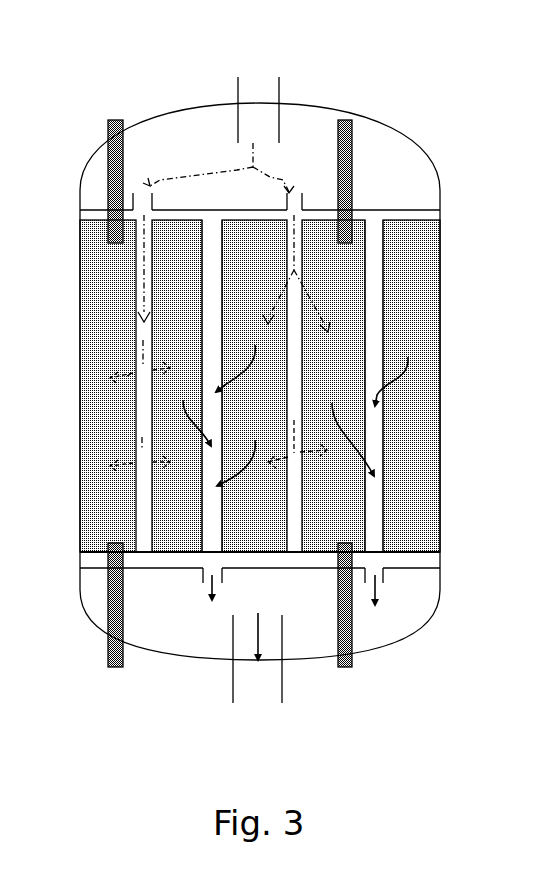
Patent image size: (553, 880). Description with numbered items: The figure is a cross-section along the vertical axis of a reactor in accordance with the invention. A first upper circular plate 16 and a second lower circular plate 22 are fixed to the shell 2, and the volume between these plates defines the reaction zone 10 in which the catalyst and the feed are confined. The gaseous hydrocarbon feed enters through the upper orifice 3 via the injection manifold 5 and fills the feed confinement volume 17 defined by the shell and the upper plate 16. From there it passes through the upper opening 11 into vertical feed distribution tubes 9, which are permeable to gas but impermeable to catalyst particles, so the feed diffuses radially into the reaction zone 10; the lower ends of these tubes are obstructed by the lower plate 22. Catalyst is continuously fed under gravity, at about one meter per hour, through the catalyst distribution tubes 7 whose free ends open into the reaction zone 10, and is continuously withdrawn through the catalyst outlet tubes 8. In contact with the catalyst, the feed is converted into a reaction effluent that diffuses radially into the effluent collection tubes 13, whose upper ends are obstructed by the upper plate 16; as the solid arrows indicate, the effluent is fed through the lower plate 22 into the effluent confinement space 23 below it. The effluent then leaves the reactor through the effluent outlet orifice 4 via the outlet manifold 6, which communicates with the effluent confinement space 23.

The shell 2 is at (408, 153).
The upper orifice 3 is at (264, 84).
The effluent outlet orifice 4 is at (262, 690).
The injection manifold 5 is at (280, 100).
The outlet manifold 6 is at (283, 678).
The catalyst distribution tubes 7 is at (112, 131).
The catalyst outlet tubes 8 is at (352, 623).
The feed distribution tubes 9 is at (140, 413).
The reaction zone 10 is at (432, 280).
The upper opening 11 is at (140, 195).
The effluent collection tubes 13 is at (213, 290).
The first upper circular plate 16 is at (390, 217).
The feed confinement volume 17 is at (188, 140).
The second lower circular plate 22 is at (97, 568).
The effluent confinement space 23 is at (412, 609).